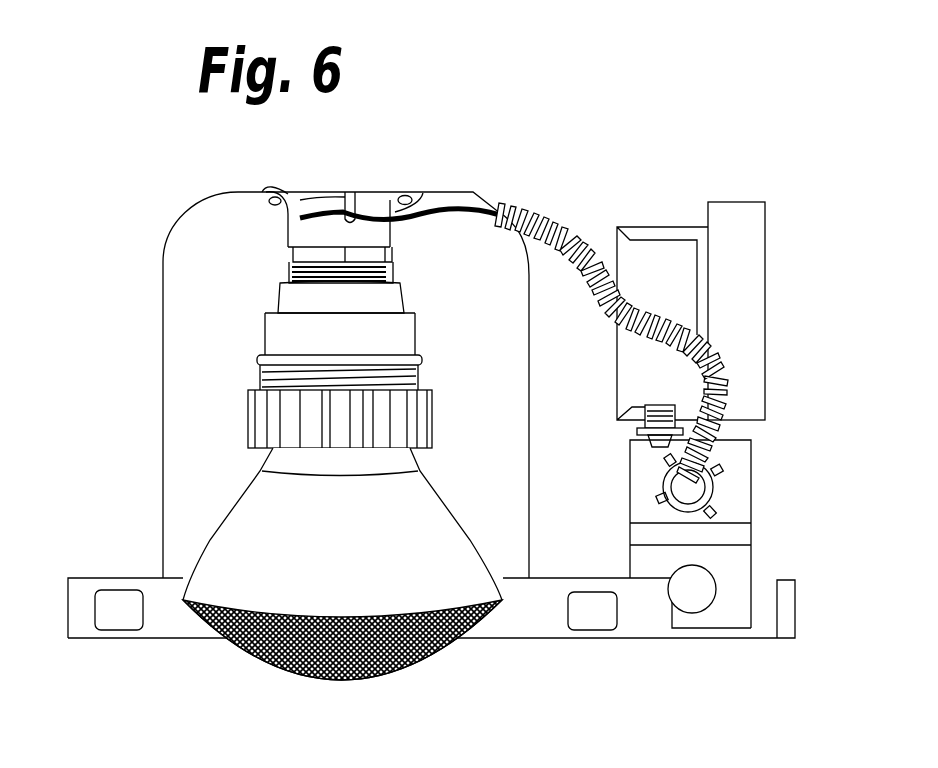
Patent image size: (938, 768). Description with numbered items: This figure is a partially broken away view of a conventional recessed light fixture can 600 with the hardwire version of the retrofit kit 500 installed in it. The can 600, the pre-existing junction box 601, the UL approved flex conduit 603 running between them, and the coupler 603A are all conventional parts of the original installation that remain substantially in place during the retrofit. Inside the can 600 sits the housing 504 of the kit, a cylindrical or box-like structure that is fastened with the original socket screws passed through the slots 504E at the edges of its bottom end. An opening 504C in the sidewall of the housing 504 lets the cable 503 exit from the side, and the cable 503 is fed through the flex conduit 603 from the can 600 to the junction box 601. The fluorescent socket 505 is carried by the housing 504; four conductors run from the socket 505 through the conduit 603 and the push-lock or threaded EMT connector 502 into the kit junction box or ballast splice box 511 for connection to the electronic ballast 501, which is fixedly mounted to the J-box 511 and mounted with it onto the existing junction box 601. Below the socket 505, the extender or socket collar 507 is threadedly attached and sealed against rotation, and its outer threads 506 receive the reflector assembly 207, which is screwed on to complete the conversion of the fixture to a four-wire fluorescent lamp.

The kit 500 is at (532, 127).
The light fixture can 600 is at (163, 477).
The housing 504 is at (307, 228).
The openings 504E is at (263, 193).
The opening 504C is at (352, 193).
The cable 503 is at (418, 217).
The fluorescent socket 505 is at (288, 283).
The extender 507 is at (287, 333).
The threads 506 is at (238, 373).
The reflector assembly 207 is at (258, 537).
The electronic ballast 501 is at (742, 293).
The junction box 511 is at (663, 245).
The EMT connector 502 is at (630, 429).
The junction box 601 is at (723, 450).
The coupler 603A is at (715, 487).
The flex conduit 603 is at (545, 217).